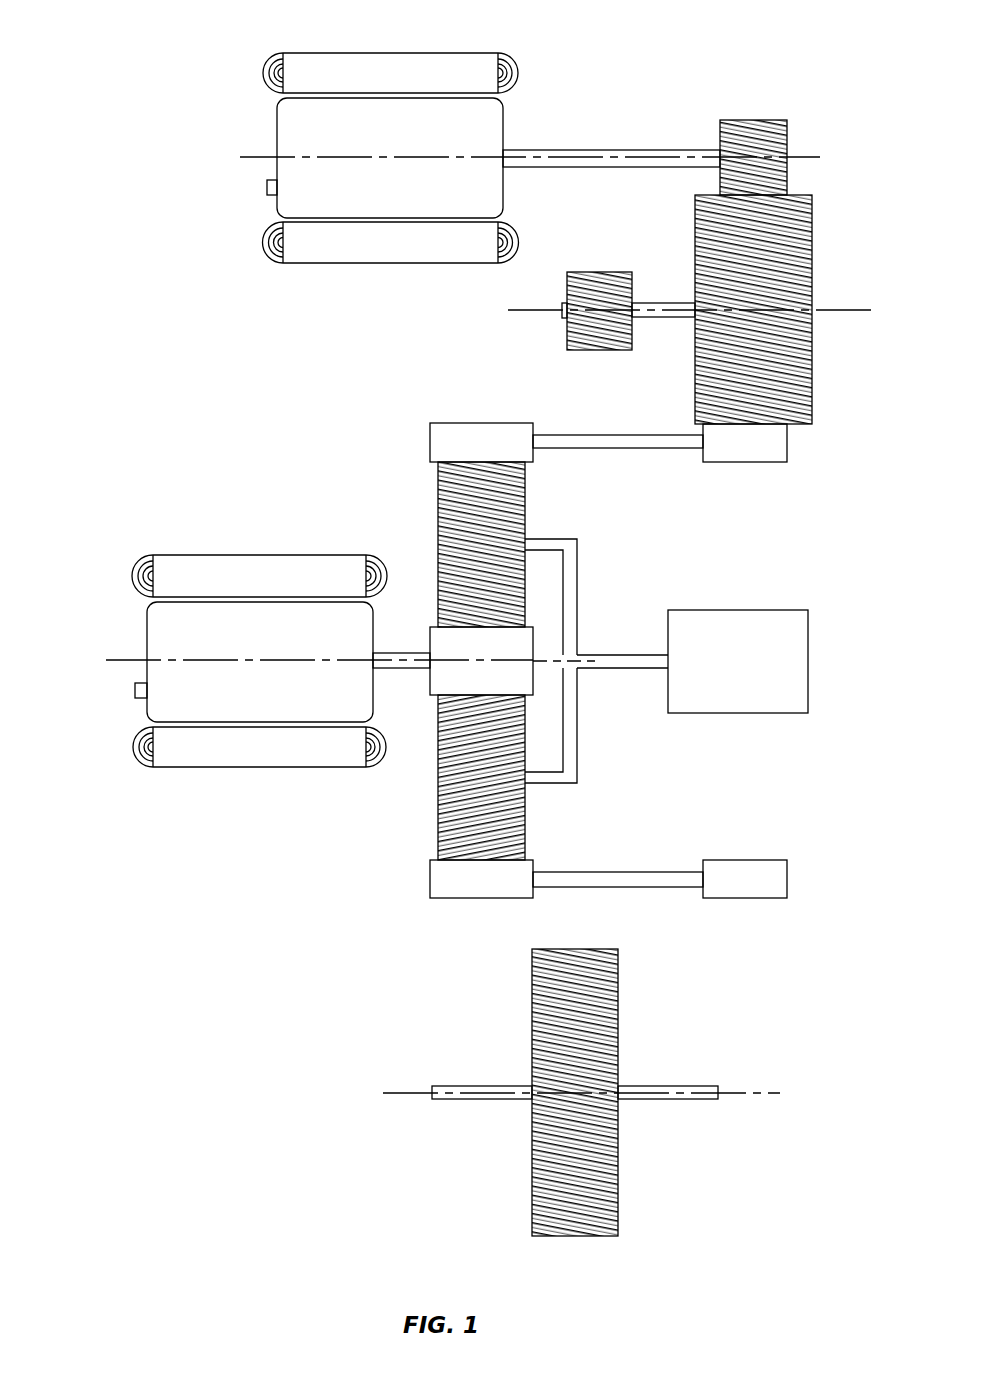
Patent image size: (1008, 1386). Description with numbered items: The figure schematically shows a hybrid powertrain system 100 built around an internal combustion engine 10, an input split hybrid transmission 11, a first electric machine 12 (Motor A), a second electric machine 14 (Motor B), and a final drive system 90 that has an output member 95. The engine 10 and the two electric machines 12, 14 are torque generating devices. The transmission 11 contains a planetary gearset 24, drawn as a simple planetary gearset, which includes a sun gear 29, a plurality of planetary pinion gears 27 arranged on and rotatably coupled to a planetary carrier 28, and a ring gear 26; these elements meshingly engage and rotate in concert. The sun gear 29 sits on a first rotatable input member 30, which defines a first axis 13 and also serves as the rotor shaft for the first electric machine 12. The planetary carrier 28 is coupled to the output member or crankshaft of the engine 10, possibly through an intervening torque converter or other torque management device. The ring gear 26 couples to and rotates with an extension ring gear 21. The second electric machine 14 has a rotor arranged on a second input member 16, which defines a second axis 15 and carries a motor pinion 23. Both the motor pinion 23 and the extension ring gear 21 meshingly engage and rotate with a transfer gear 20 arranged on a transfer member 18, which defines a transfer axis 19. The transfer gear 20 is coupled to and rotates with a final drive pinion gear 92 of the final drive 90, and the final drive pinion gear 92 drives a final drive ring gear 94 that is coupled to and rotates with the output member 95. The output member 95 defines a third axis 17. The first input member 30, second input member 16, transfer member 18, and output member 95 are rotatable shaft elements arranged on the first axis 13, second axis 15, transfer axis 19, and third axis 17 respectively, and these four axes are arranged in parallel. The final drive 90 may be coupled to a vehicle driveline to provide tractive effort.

The hybrid powertrain system 100 is at (463, 618).
The second electric machine 14 is at (270, 140).
The second axis 15 is at (232, 157).
The second input member 16 is at (617, 150).
The motor pinion 23 is at (787, 145).
The transfer gear 20 is at (812, 255).
The transfer axis 19 is at (503, 310).
The final drive pinion gear 92 is at (567, 330).
The transfer member 18 is at (660, 302).
The input split hybrid transmission 11 is at (492, 657).
The ring gear 26 is at (430, 440).
The planetary gearset 24 is at (436, 508).
The planetary pinion gears 27 is at (525, 500).
The sun gear 29 is at (533, 680).
The planetary carrier 28 is at (577, 580).
The extension ring gear 21 is at (740, 462).
The first rotatable input member 30 is at (390, 653).
The internal combustion engine 10 is at (754, 674).
The first electric machine 12 is at (141, 617).
The first axis 13 is at (101, 660).
The final drive system 90 is at (540, 1092).
The final drive ring gear 94 is at (528, 1045).
The third axis 17 is at (377, 1093).
The output member 95 is at (683, 1086).